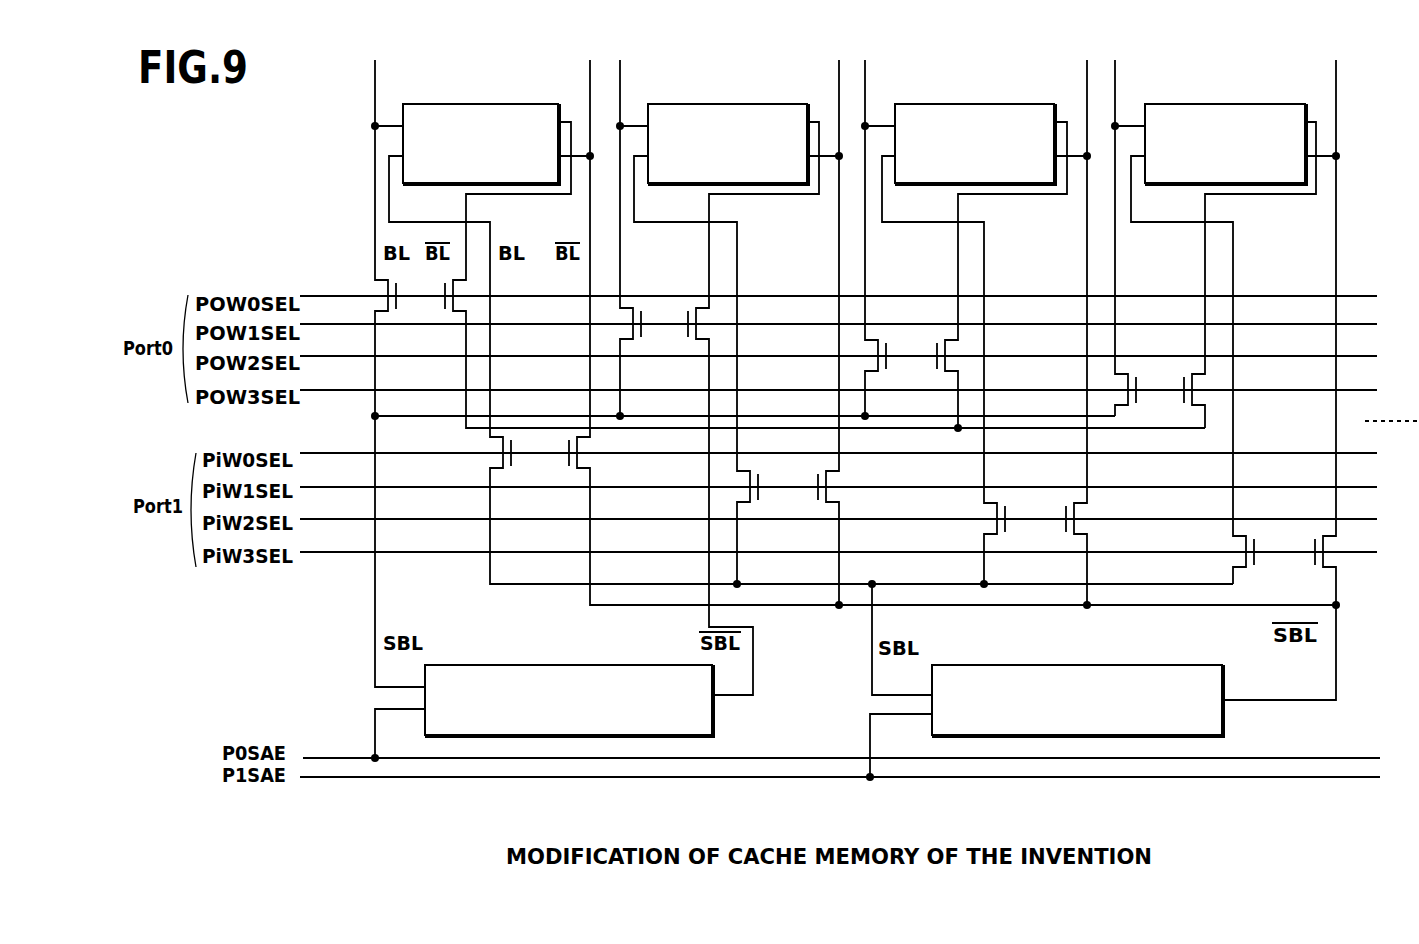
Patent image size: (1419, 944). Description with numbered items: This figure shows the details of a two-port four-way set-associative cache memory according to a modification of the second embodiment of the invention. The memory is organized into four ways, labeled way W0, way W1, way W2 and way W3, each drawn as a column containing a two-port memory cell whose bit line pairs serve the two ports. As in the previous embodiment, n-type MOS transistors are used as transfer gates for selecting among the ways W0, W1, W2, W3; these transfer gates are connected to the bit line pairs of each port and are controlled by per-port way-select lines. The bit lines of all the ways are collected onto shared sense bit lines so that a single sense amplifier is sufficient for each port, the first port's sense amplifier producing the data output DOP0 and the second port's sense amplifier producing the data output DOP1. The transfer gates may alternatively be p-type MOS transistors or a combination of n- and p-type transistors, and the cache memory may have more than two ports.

The word line W0 / 2-port memory cell W0 is at (475, 100).
The word line W1 / memory cell DO W1 is at (725, 100).
The word line W2 / memory cell DO W2 is at (968, 100).
The word line W3 / memory cell DO W3 is at (1220, 100).
The Port0 sense amplifier output DOP0 is at (568, 735).
The Port1 sense amplifier output DOP1 is at (1073, 735).